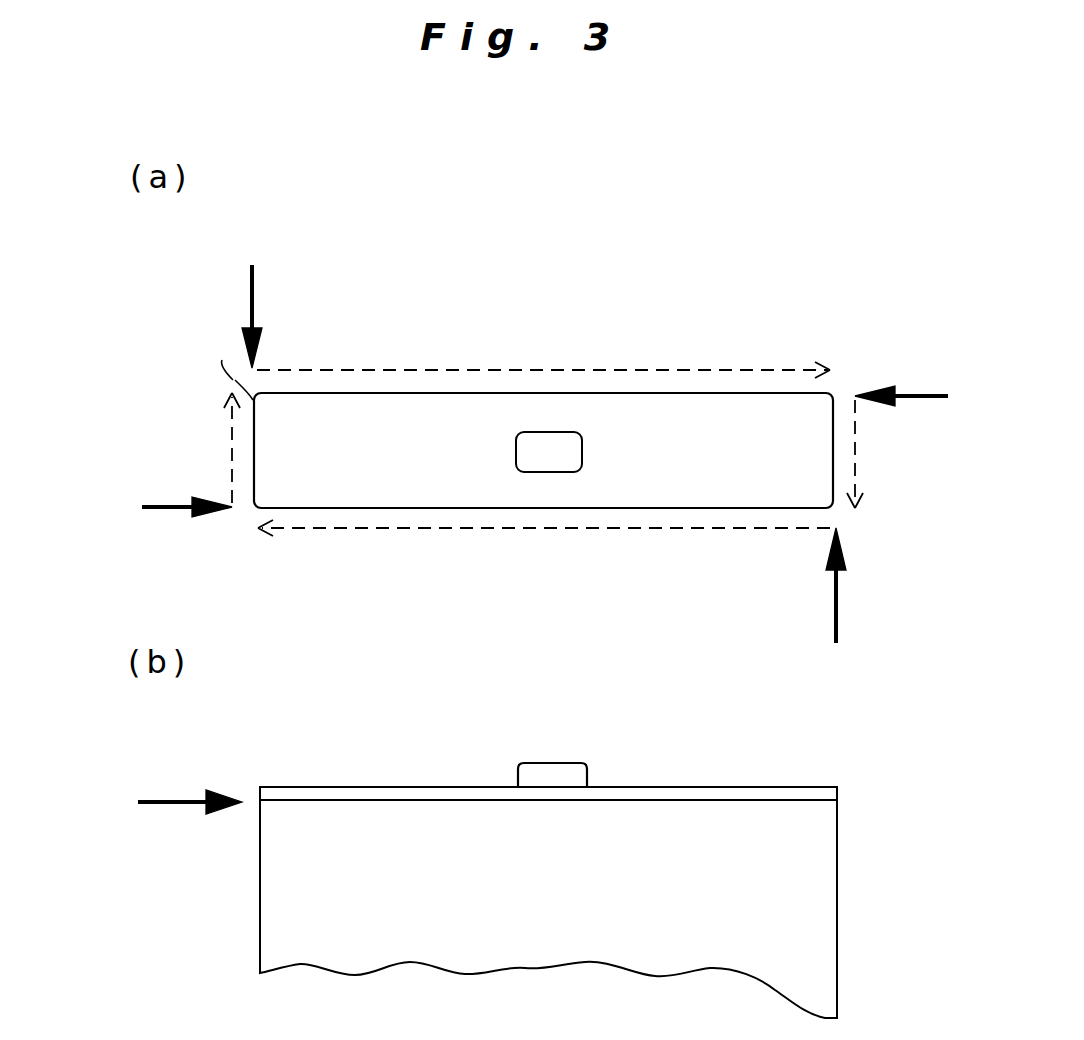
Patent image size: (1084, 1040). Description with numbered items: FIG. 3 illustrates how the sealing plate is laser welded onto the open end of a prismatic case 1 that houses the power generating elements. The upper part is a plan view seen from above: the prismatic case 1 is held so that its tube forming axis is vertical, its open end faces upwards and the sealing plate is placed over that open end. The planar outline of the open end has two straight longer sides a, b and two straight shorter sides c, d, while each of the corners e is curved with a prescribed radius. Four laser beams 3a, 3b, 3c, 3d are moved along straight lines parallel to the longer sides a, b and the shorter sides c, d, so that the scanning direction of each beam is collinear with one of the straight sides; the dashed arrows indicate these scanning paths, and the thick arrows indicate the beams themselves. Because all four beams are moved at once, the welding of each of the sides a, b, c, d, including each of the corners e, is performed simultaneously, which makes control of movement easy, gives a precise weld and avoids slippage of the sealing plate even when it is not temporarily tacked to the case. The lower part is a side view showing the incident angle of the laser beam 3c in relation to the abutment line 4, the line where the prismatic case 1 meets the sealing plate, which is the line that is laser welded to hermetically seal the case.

The prismatic case 1 is at (835, 873).
The abutment line 4 is at (643, 800).
The laser beam 3a is at (254, 290).
The laser beam 3b is at (838, 607).
The laser beam 3c is at (162, 506).
The laser beam 3d is at (913, 394).
The longer side a is at (509, 393).
The longer side b is at (514, 508).
The shorter side c is at (254, 461).
The shorter side d is at (834, 437).
The corner e is at (254, 393).